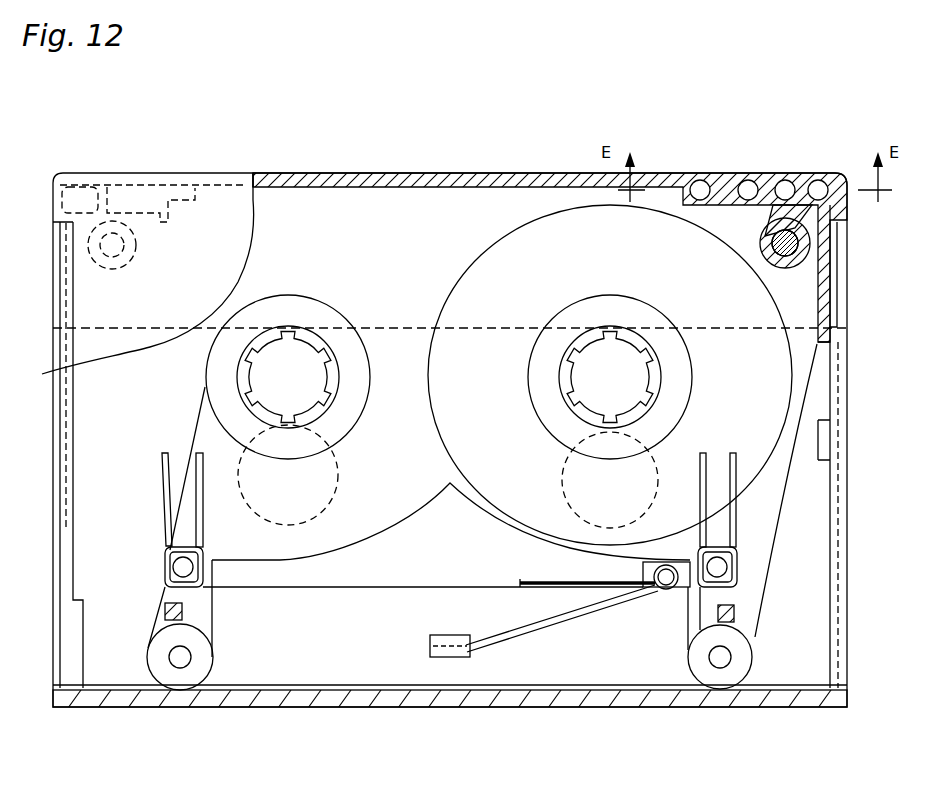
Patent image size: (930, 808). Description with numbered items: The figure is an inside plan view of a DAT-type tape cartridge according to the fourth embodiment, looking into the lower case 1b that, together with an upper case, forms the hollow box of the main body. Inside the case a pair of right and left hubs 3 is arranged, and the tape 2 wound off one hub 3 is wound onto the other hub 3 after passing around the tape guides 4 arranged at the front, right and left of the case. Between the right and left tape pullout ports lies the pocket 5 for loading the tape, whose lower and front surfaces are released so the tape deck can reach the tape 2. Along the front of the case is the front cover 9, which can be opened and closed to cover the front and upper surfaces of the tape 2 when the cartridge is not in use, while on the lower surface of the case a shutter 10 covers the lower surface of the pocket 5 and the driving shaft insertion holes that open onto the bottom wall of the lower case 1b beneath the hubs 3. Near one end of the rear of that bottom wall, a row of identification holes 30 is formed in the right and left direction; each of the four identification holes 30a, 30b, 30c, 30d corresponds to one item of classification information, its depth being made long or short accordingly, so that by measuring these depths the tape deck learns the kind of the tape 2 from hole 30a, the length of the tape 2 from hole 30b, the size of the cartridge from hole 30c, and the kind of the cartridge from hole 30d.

The lower case 1b is at (461, 175).
The tape 2 is at (458, 283).
The hub 3 is at (287, 296).
The tape guide 4 is at (181, 668).
The pocket 5 is at (358, 656).
The front cover 9 is at (566, 703).
The shutter 10 is at (150, 328).
The identification holes 30 is at (757, 127).
The identification hole 30a is at (700, 181).
The identification hole 30b is at (748, 181).
The identification hole 30c is at (786, 181).
The identification hole 30d is at (833, 151).